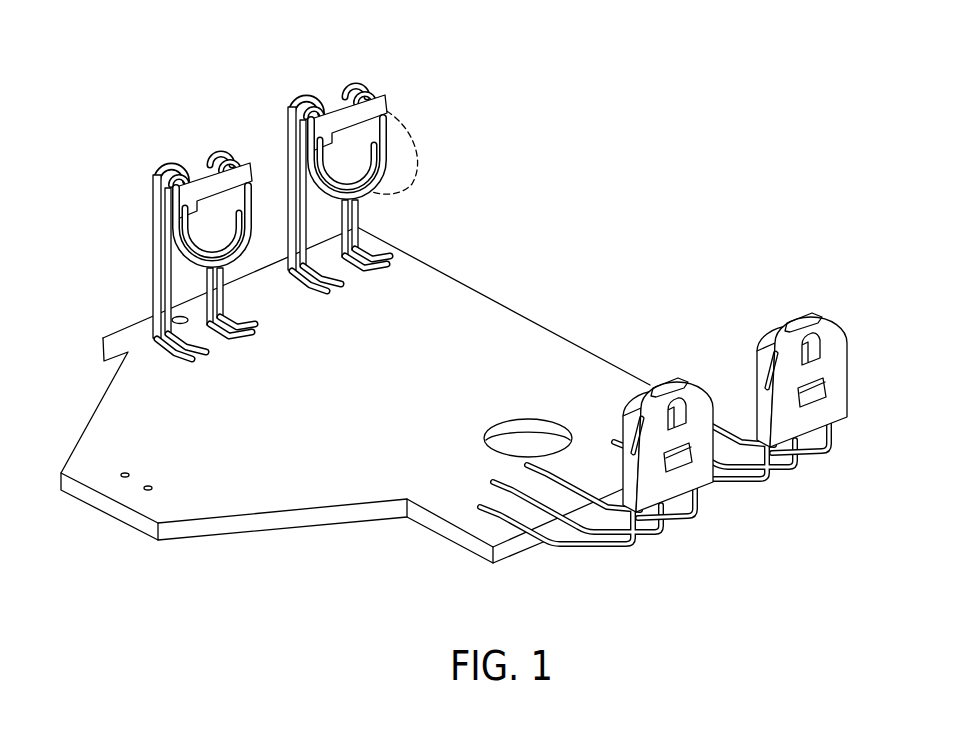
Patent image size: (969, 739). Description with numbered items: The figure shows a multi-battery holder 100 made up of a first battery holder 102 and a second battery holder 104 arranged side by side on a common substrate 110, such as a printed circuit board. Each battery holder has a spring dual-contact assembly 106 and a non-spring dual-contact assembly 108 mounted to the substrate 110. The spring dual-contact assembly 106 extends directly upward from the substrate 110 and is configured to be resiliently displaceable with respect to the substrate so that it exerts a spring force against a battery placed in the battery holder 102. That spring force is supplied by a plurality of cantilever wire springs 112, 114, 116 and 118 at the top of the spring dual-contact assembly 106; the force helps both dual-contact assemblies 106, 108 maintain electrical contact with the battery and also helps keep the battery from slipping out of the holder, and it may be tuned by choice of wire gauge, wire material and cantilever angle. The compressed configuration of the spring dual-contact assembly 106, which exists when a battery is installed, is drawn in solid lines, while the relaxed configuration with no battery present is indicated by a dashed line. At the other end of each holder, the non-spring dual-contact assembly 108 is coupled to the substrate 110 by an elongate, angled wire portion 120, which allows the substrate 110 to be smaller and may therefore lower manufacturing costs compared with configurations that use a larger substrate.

The multi-battery holder 100 is at (513, 243).
The first battery holder 102 is at (216, 98).
The second battery holder 104 is at (129, 213).
The spring dual-contact assembly 106 is at (383, 84).
The non-spring dual-contact assembly 108 is at (838, 322).
The substrate 110 is at (565, 357).
The cantilever wire spring 112 is at (295, 100).
The cantilever wire spring 114 is at (372, 80).
The cantilever wire spring 116 is at (312, 105).
The cantilever wire spring 118 is at (348, 85).
The elongate, angled wire portion 120 is at (733, 488).